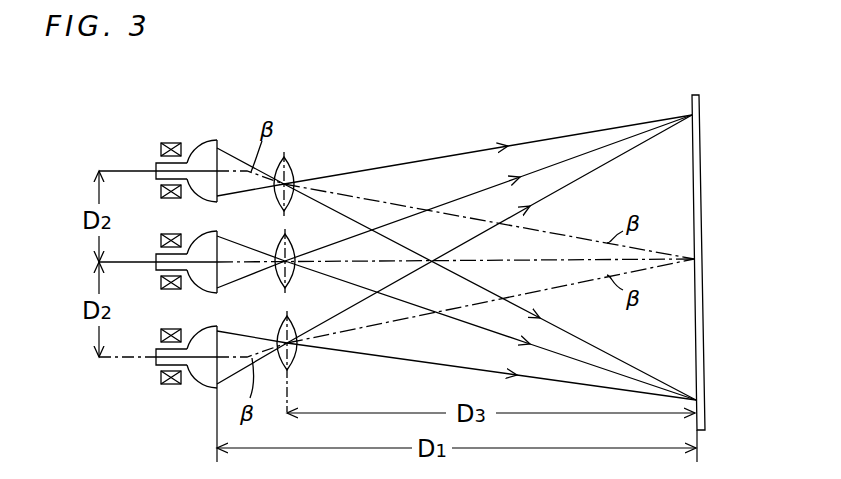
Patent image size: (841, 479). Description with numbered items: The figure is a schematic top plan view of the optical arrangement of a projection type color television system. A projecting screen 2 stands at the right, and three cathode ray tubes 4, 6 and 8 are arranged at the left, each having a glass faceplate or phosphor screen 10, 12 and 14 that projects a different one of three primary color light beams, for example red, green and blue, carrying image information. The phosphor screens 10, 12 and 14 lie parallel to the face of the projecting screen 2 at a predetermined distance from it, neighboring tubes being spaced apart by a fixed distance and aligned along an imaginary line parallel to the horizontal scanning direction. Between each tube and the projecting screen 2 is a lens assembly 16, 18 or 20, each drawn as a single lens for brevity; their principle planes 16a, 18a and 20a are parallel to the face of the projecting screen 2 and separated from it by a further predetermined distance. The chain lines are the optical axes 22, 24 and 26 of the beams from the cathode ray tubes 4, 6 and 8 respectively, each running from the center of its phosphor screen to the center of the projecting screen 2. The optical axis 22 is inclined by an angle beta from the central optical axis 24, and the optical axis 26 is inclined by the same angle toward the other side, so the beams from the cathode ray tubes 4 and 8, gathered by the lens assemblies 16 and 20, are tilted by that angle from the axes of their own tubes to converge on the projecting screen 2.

The projecting screen 2 is at (698, 196).
The cathode ray tube 4 is at (157, 168).
The cathode ray tube 6 is at (157, 272).
The cathode ray tube 8 is at (157, 366).
The phosphor screen 10 is at (218, 151).
The phosphor screen 12 is at (220, 251).
The phosphor screen 14 is at (219, 341).
The lens assembly 16 is at (296, 172).
The principle plane 16a is at (283, 156).
The lens assembly 18 is at (294, 283).
The principle plane 18a is at (288, 238).
The lens assembly 20 is at (298, 350).
The principle plane 20a is at (293, 359).
The optical axis 22 is at (553, 232).
The optical axis 24 is at (557, 262).
The optical axis 26 is at (567, 285).